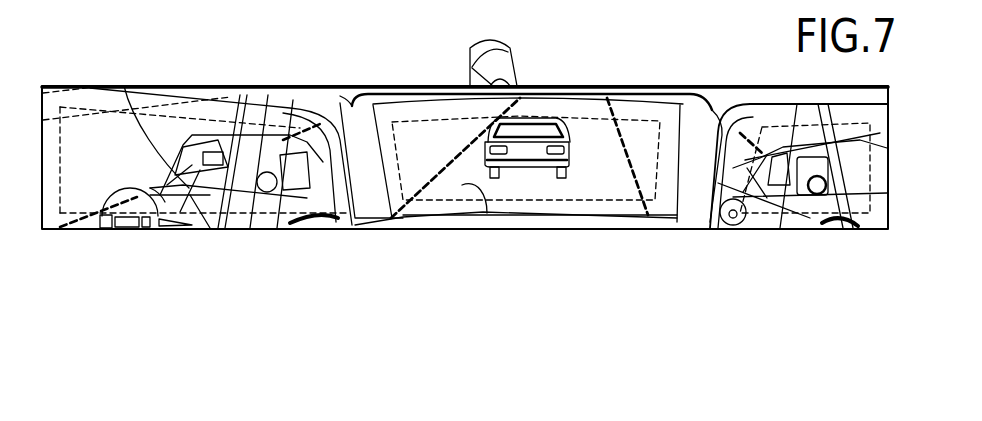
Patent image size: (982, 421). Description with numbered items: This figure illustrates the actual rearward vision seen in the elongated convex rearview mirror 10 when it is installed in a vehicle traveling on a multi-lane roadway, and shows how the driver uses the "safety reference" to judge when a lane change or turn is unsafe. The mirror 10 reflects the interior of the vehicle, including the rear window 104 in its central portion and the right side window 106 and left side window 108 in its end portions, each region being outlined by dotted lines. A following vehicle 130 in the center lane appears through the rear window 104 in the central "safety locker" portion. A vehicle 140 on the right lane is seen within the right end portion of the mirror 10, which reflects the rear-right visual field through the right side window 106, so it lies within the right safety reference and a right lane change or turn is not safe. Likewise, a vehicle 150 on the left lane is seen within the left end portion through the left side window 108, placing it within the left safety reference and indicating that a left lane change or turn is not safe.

The elongated convex rearview mirror 10 is at (397, 78).
The rear window 104 is at (462, 185).
The right side window 106 is at (865, 229).
The left side window 108 is at (280, 212).
The following vehicle 130 is at (522, 145).
The vehicle on the right lane 140 is at (753, 215).
The vehicle on the left lane 150 is at (100, 229).